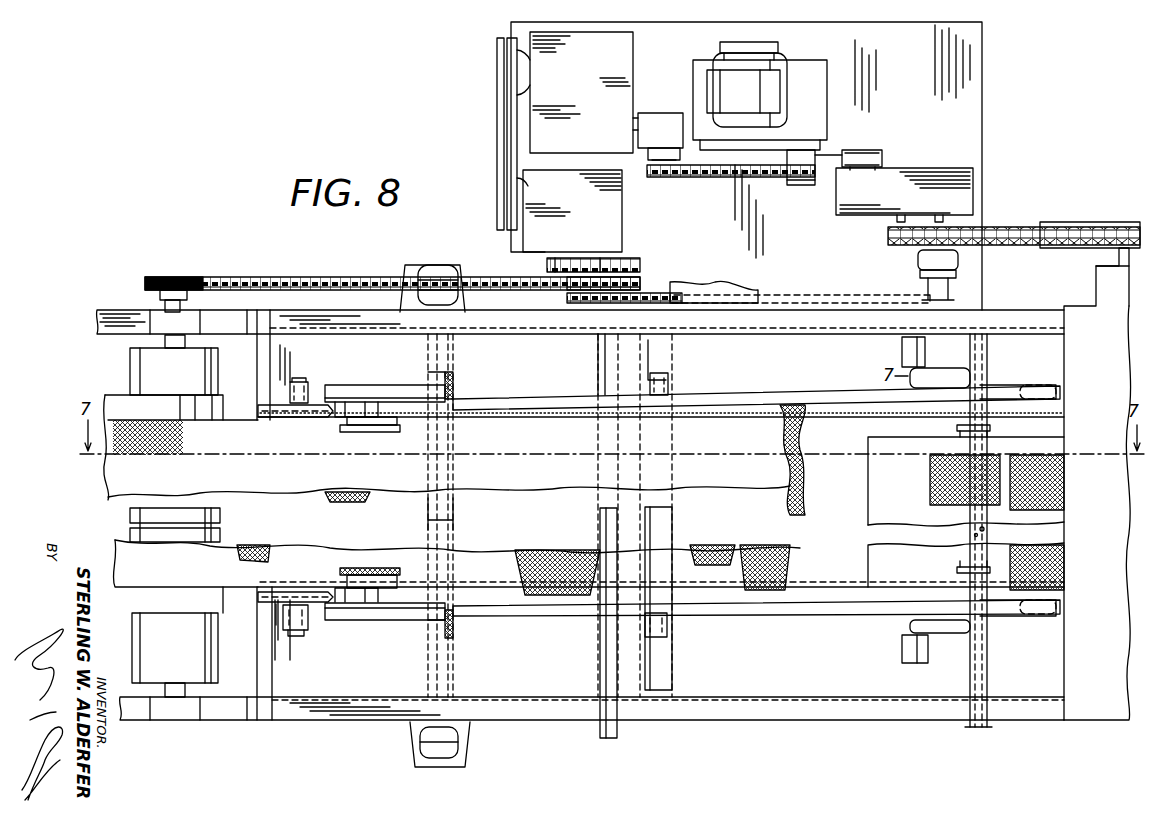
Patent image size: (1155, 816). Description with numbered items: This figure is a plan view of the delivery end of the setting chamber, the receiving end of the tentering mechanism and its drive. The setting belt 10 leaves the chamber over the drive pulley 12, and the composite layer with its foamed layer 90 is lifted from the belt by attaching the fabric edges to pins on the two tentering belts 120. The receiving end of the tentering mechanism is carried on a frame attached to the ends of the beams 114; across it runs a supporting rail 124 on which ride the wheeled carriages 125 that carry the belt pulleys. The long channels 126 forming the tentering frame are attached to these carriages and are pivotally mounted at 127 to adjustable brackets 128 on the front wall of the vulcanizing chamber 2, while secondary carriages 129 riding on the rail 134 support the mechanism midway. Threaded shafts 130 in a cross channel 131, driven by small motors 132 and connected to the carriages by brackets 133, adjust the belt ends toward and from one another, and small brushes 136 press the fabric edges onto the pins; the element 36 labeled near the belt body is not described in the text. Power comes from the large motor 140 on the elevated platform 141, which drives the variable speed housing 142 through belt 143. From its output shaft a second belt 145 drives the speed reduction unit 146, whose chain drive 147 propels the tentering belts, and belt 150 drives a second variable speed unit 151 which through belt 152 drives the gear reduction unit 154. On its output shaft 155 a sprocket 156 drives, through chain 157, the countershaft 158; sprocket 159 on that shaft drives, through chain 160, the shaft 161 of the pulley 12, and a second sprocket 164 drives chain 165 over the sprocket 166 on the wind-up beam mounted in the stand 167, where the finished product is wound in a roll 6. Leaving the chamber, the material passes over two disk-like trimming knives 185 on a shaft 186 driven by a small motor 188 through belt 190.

The vulcanizing chamber 2 is at (1080, 735).
The roll 6 is at (866, 505).
The setting belt 10 is at (226, 400).
The drive pulley 12 is at (220, 355).
The mandrel body 36 is at (232, 435).
The foamed layer 90 is at (806, 485).
The beams 114 is at (228, 310).
The tentering belts 120 is at (862, 418).
The supporting rail 124 is at (295, 645).
The wheeled carriages 125 is at (308, 388).
The channels 126 is at (540, 400).
The pivot points 127 is at (1050, 372).
The adjustable brackets 128 is at (1030, 388).
The secondary carriages 129 is at (668, 380).
The threaded shafts 130 is at (425, 372).
The channel 131 is at (455, 650).
The small motors 132 is at (452, 260).
The brackets 133 is at (392, 385).
The rail 134 is at (670, 660).
The small brushes 136 is at (398, 432).
The large motor 140 is at (775, 62).
The elevated platform 141 is at (984, 128).
The housing 142 is at (763, 130).
The belt 143 is at (750, 41).
The second belt 145 is at (850, 150).
The speed reduction unit 146 is at (862, 215).
The chain drive 147 is at (1000, 227).
The belt 150 is at (762, 180).
The second variable speed unit 151 is at (634, 108).
The belt 152 is at (495, 130).
The gear reduction unit 154 is at (622, 220).
The output shaft 155 is at (545, 266).
The sprocket 156 is at (560, 258).
The chain 157 is at (612, 258).
The countershaft 158 is at (596, 350).
The sprocket 159 is at (640, 270).
The chain 160 is at (330, 277).
The shaft 161 is at (158, 301).
The second sprocket 164 is at (565, 298).
The chain 165 is at (756, 286).
The sprocket 166 is at (930, 286).
The stand 167 is at (900, 352).
The trimming knives 185 is at (990, 431).
The shaft 186 is at (975, 528).
The small motor 188 is at (960, 262).
The belt 190 is at (958, 284).